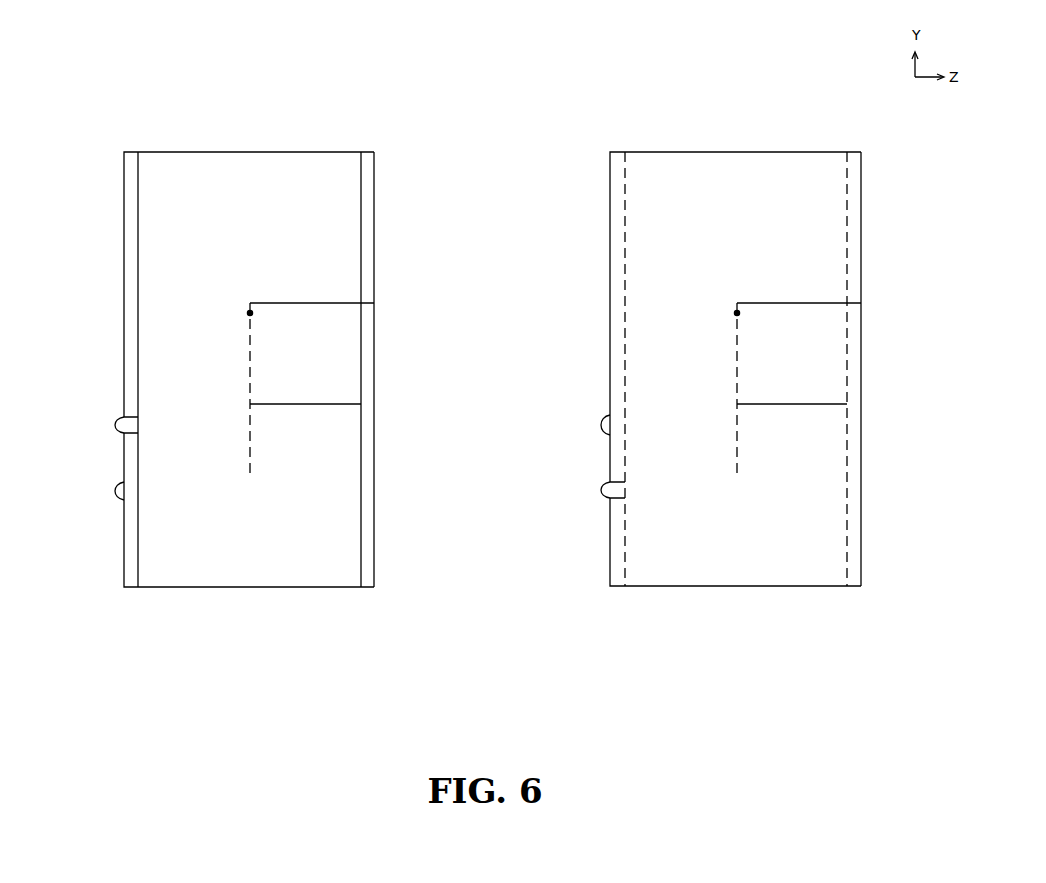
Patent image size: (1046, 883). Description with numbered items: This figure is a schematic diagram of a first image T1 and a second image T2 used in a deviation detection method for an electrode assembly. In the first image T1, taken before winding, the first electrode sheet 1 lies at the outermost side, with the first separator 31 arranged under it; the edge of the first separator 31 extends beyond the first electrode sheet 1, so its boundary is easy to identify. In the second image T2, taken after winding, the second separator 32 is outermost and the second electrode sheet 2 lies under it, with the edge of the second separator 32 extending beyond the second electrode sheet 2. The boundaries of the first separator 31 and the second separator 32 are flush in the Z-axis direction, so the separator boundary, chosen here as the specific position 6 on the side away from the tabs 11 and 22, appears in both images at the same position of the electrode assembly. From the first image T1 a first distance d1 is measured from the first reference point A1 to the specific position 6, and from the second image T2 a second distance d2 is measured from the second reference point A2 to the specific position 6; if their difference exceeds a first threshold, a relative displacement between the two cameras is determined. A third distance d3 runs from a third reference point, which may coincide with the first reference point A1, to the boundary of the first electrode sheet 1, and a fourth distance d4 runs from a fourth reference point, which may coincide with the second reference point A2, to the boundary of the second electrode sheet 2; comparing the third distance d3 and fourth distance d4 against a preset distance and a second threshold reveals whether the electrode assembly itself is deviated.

The first electrode sheet 1 is at (361, 350).
The second electrode sheet 2 is at (847, 340).
The specific position 6 is at (374, 293).
The tab 11 is at (117, 432).
The tab 22 is at (118, 497).
The first separator 31 is at (374, 228).
The second separator 32 is at (861, 215).
The first reference point A1 is at (250, 303).
The second reference point A2 is at (737, 303).
The first distance d1 is at (312, 293).
The second distance d2 is at (799, 293).
The third distance d3 is at (305, 394).
The fourth distance d4 is at (792, 394).
The first image T1 is at (238, 615).
The second image T2 is at (743, 616).